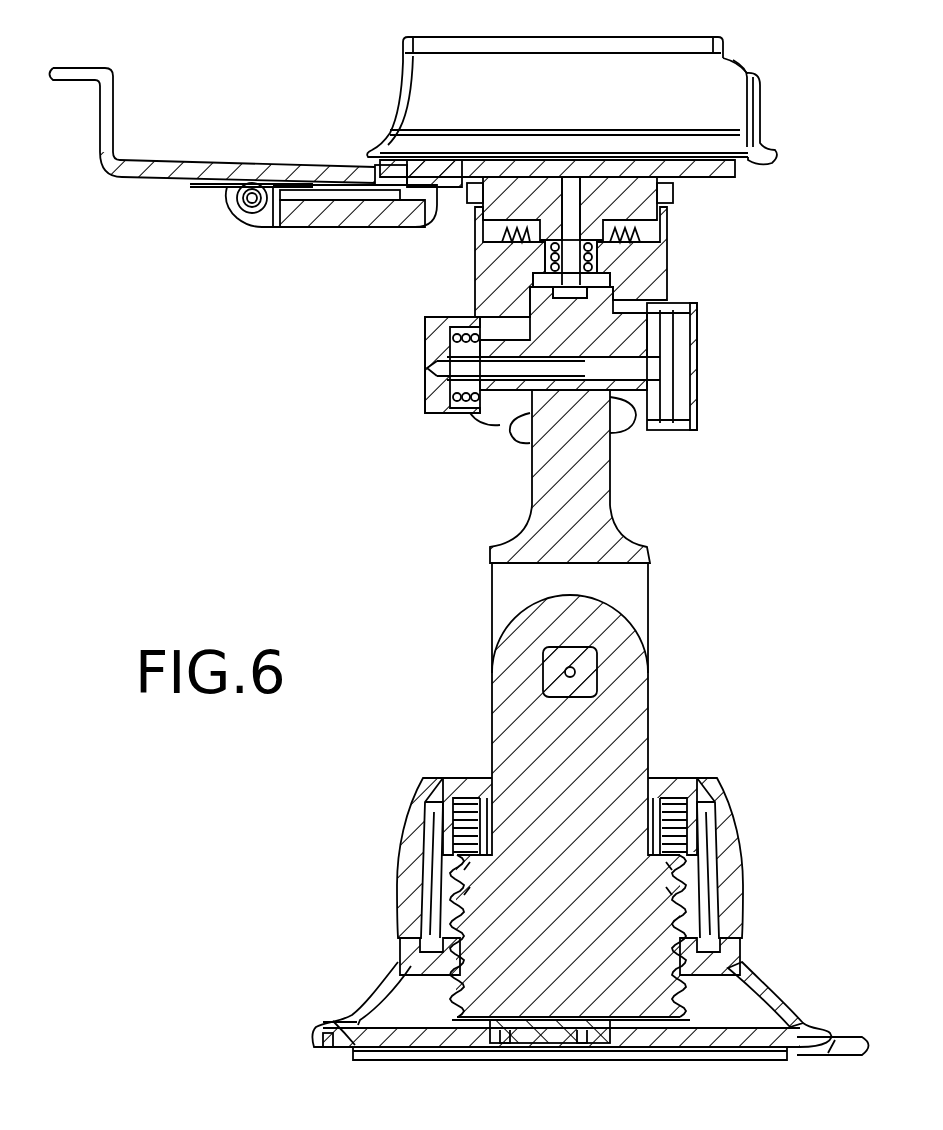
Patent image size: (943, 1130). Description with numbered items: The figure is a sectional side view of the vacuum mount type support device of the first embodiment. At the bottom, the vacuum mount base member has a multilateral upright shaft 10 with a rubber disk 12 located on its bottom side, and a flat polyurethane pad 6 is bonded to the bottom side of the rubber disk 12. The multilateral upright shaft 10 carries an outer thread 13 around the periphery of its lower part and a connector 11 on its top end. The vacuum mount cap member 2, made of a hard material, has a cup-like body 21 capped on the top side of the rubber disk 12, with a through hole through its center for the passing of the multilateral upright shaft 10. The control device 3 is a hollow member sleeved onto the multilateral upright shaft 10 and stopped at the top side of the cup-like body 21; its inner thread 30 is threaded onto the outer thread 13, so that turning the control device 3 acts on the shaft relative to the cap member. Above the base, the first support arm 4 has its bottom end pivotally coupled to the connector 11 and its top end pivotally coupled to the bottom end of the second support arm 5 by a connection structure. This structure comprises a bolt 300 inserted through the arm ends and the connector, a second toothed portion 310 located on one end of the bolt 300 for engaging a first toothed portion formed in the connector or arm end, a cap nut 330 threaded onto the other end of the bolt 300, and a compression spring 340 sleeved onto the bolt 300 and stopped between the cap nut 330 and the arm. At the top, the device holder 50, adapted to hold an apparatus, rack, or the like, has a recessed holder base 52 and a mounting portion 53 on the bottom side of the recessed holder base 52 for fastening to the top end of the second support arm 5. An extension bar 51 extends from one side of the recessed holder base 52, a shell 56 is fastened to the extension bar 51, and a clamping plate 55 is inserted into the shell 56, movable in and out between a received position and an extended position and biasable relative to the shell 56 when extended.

The vacuum mount cap member 2 is at (390, 960).
The control device 3 is at (715, 833).
The first support arm 4 is at (527, 550).
The second support arm 5 is at (485, 270).
The flat polyurethane pad 6 is at (655, 1055).
The multilateral upright shaft 10 is at (488, 730).
The connector 11 is at (530, 640).
The rubber disk 12 is at (370, 1045).
The outer thread 13 is at (435, 905).
The cup-like body 21 is at (357, 1003).
The inner thread 30 is at (690, 897).
The device holder 50 is at (704, 93).
The extension bar 51 is at (370, 245).
The recessed holder base 52 is at (388, 117).
The mounting portion 53 is at (690, 175).
The clamping plate 55 is at (132, 163).
The shell 56 is at (268, 222).
The bolt 300 is at (540, 380).
The second toothed portion 310 is at (635, 400).
The cap nut 330 is at (440, 397).
The compression spring 340 is at (478, 415).